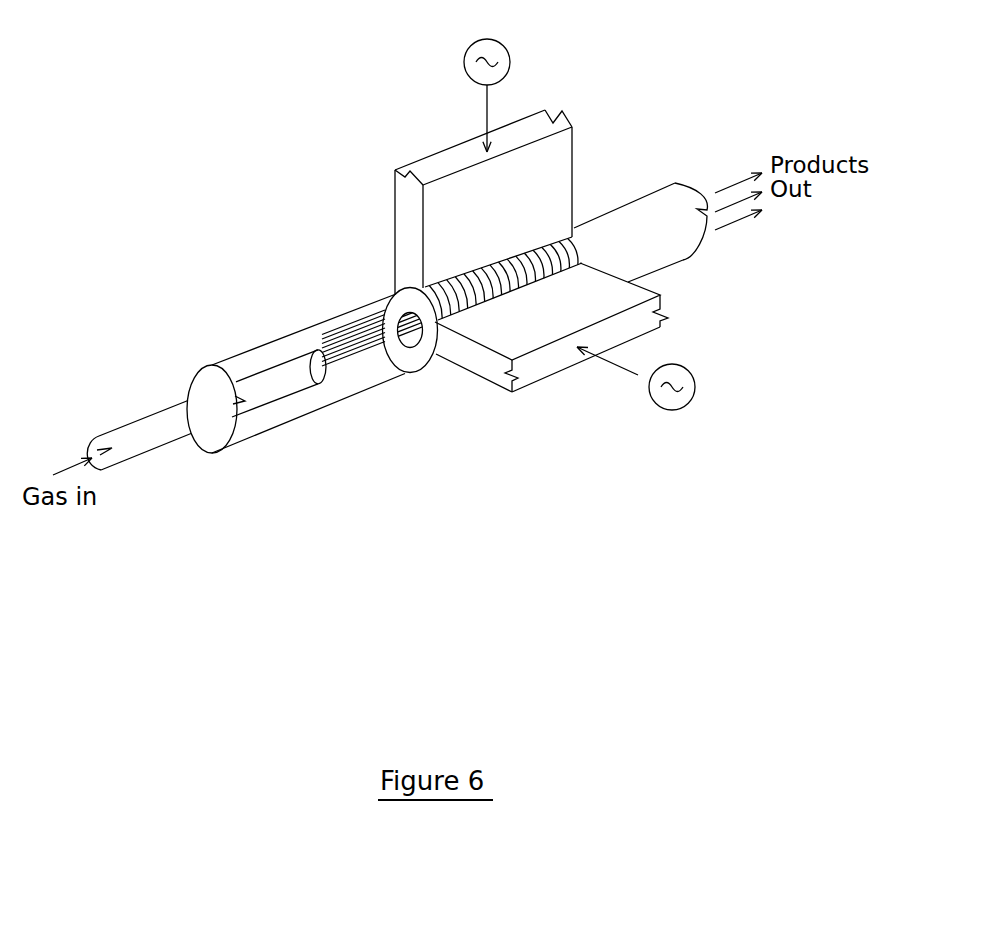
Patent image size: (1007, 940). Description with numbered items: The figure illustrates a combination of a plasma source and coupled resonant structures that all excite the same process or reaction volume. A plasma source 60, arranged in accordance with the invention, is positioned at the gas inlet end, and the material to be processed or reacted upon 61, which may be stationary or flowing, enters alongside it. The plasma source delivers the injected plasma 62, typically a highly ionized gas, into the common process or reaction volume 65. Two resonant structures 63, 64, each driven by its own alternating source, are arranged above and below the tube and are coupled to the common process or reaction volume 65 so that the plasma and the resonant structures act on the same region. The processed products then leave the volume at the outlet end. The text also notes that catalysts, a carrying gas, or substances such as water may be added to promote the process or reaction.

The plasma source 60 is at (120, 427).
The material to be processed or reacted upon 61 is at (207, 380).
The injected plasma 62 is at (340, 372).
The resonant structure 63 is at (394, 233).
The resonant structure 64 is at (470, 372).
The common process or reaction volume 65 is at (567, 255).